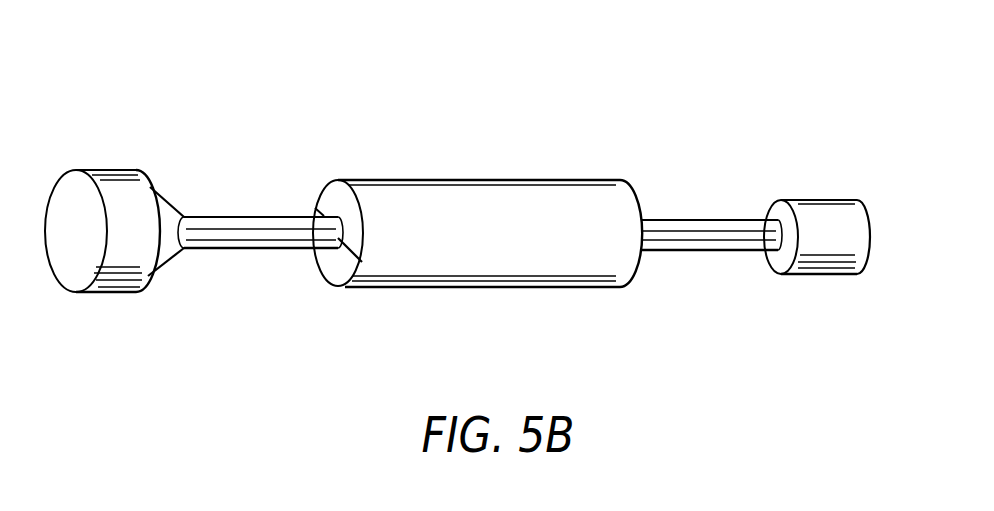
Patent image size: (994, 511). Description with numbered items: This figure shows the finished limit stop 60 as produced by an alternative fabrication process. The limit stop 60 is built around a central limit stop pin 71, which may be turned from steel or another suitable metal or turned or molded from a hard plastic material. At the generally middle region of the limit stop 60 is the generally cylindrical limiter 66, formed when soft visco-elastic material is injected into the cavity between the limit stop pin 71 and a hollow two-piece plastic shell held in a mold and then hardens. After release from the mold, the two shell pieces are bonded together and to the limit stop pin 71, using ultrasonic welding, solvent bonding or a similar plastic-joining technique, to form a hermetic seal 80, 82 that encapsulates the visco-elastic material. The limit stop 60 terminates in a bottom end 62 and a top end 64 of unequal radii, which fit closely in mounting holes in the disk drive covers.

The limit stop 60 is at (628, 118).
The bottom end 62 is at (817, 200).
The top end 64 is at (108, 170).
The limiter 66 is at (338, 171).
The limit stop pin 71 is at (709, 227).
The hermetic seal 80 is at (547, 263).
The hermetic seal 82 is at (334, 257).